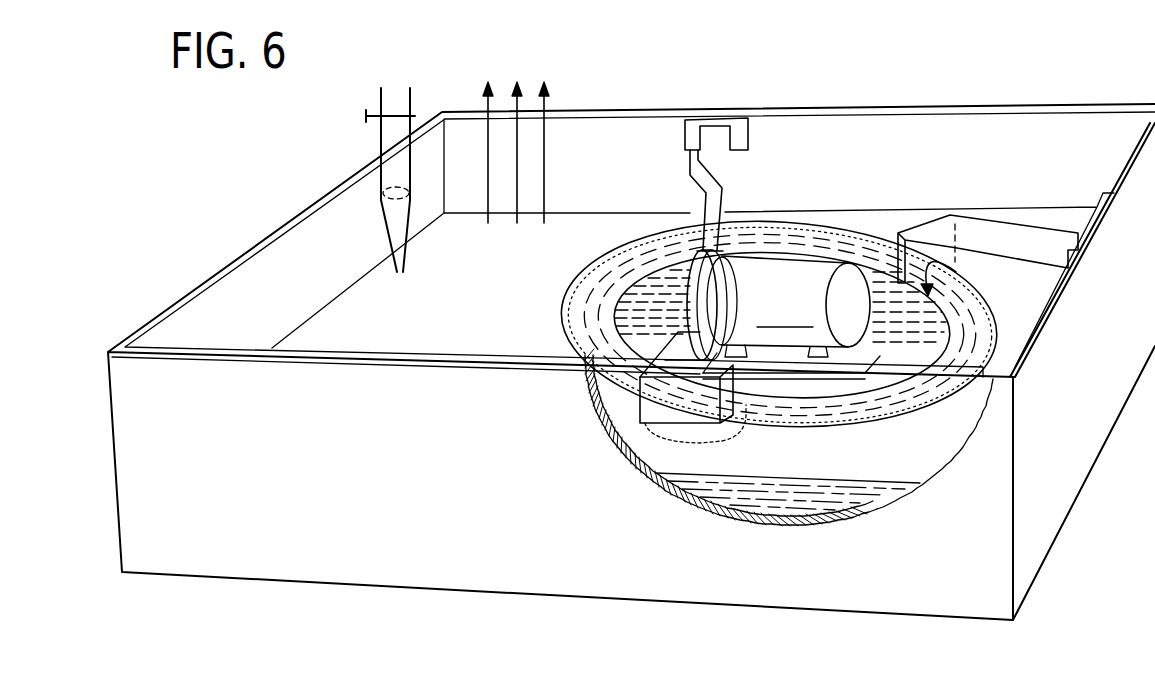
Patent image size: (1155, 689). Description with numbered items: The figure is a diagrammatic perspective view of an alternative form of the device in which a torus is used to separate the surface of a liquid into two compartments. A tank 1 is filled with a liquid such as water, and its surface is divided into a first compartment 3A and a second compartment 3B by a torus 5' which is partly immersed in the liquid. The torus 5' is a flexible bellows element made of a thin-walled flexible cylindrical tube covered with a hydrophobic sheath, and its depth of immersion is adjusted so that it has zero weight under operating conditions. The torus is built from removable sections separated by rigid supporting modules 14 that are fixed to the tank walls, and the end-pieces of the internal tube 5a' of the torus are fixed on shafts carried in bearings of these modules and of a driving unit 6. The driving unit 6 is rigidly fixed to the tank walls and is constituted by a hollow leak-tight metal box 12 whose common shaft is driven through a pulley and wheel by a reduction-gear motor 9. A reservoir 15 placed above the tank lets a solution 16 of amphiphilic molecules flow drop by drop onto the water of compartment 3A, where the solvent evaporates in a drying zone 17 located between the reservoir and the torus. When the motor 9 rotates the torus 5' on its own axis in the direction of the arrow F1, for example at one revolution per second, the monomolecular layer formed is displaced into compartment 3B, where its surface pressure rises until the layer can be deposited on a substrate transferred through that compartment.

The tank 1 is at (182, 300).
The compartment 3A is at (361, 306).
The compartment 3B is at (888, 323).
The torus 5' is at (774, 324).
The internal tube of the torus 5a' is at (780, 346).
The driving unit 6 is at (680, 325).
The reduction-gear motor 9 is at (794, 315).
The hollow leak-tight metal box 12 is at (662, 407).
The supporting modules 14 is at (705, 213).
The reservoir 15 is at (380, 150).
The solution of amphiphilic molecules 16 is at (403, 220).
The drying zone 17 is at (487, 104).
The arrow indicating direction of rotation F1 is at (952, 270).